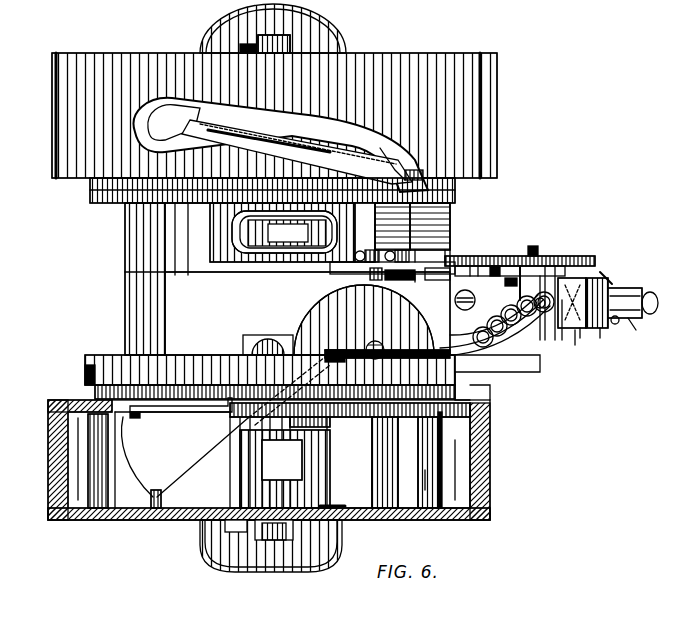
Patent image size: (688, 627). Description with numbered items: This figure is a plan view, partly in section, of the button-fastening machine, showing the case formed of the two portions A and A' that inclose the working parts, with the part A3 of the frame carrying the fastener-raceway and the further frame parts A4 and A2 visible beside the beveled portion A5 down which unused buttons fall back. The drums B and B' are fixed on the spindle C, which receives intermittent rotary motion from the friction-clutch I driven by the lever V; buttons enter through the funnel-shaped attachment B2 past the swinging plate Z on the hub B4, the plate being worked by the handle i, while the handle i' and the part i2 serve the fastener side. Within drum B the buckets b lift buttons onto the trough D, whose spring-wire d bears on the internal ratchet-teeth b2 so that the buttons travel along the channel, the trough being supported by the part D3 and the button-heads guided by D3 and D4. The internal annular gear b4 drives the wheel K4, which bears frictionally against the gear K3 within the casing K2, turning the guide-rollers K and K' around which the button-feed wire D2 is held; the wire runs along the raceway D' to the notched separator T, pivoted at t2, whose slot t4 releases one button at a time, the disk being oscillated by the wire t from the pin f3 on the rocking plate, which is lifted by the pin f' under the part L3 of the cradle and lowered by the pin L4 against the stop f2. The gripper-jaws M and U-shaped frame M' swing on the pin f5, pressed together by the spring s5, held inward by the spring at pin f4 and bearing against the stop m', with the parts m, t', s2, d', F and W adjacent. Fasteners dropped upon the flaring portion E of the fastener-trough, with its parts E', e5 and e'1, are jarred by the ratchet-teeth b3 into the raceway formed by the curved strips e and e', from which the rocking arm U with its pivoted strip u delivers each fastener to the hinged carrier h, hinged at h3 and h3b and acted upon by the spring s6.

The handle i is at (274, 26).
The handle i' is at (280, 28).
The cap part i2 is at (246, 44).
The drum B' is at (274, 115).
The outer flaring portion of the fastener-trough E is at (281, 145).
The lever arm E' is at (297, 152).
The lever rod e5 is at (269, 141).
The lever end e'1 is at (387, 149).
The internal ratchet-teeth b3 is at (405, 176).
The part of the frame A3 is at (466, 200).
The case portion A' is at (287, 279).
The frame part A4 is at (212, 254).
The friction-clutch I is at (282, 232).
The lever V is at (430, 238).
The curved strip of the fastener-raceway e is at (387, 226).
The curved strip of the fastener-raceway e' is at (427, 226).
The rocking arm U is at (425, 260).
The strip u is at (367, 265).
The case portion A is at (307, 313).
The beveled portion A5 is at (364, 320).
The hinge h3 is at (386, 280).
The spring s6 is at (391, 281).
The side piece of the hinged fastener-carrier h is at (422, 283).
The upwardly-projecting part of the cradle L3 is at (437, 281).
The button-feed wire D2 is at (337, 344).
The table F is at (520, 256).
The pin f' is at (472, 266).
The pin f4 is at (548, 312).
The pin f3 is at (519, 243).
The wire t is at (520, 276).
The stop f2 is at (535, 244).
The pin L4 is at (552, 270).
The notched separator T is at (570, 276).
The gripper-jaws M is at (600, 307).
The U-shaped frame M' is at (633, 298).
The stop m' is at (622, 273).
The pin m is at (629, 332).
The spring s5 is at (622, 320).
The pin f5 is at (578, 332).
The slot t4 is at (563, 326).
The pivot t2 is at (546, 314).
The rod t' is at (519, 282).
The spring s2 is at (533, 315).
The raceway D' is at (497, 332).
The roller d' is at (461, 308).
The guide D4 is at (455, 378).
The gear K3 is at (470, 394).
The guide-roller K is at (396, 353).
The guide-roller K' is at (335, 345).
The catch h3b is at (358, 352).
The plate A2 is at (270, 377).
The spring-wire d is at (191, 401).
The internal annular gear b4 is at (135, 384).
The drum B is at (269, 460).
The trough D is at (172, 454).
The internal ratchet-teeth b2 is at (160, 412).
The rod W is at (240, 426).
The buckets b is at (151, 496).
The spindle C is at (350, 455).
The supporting part and guide D3 is at (308, 408).
The hub B4 is at (285, 469).
The casing K2 is at (349, 462).
The wheel K4 is at (421, 462).
The plate Z is at (332, 496).
The funnel-shaped attachment B2 is at (318, 552).